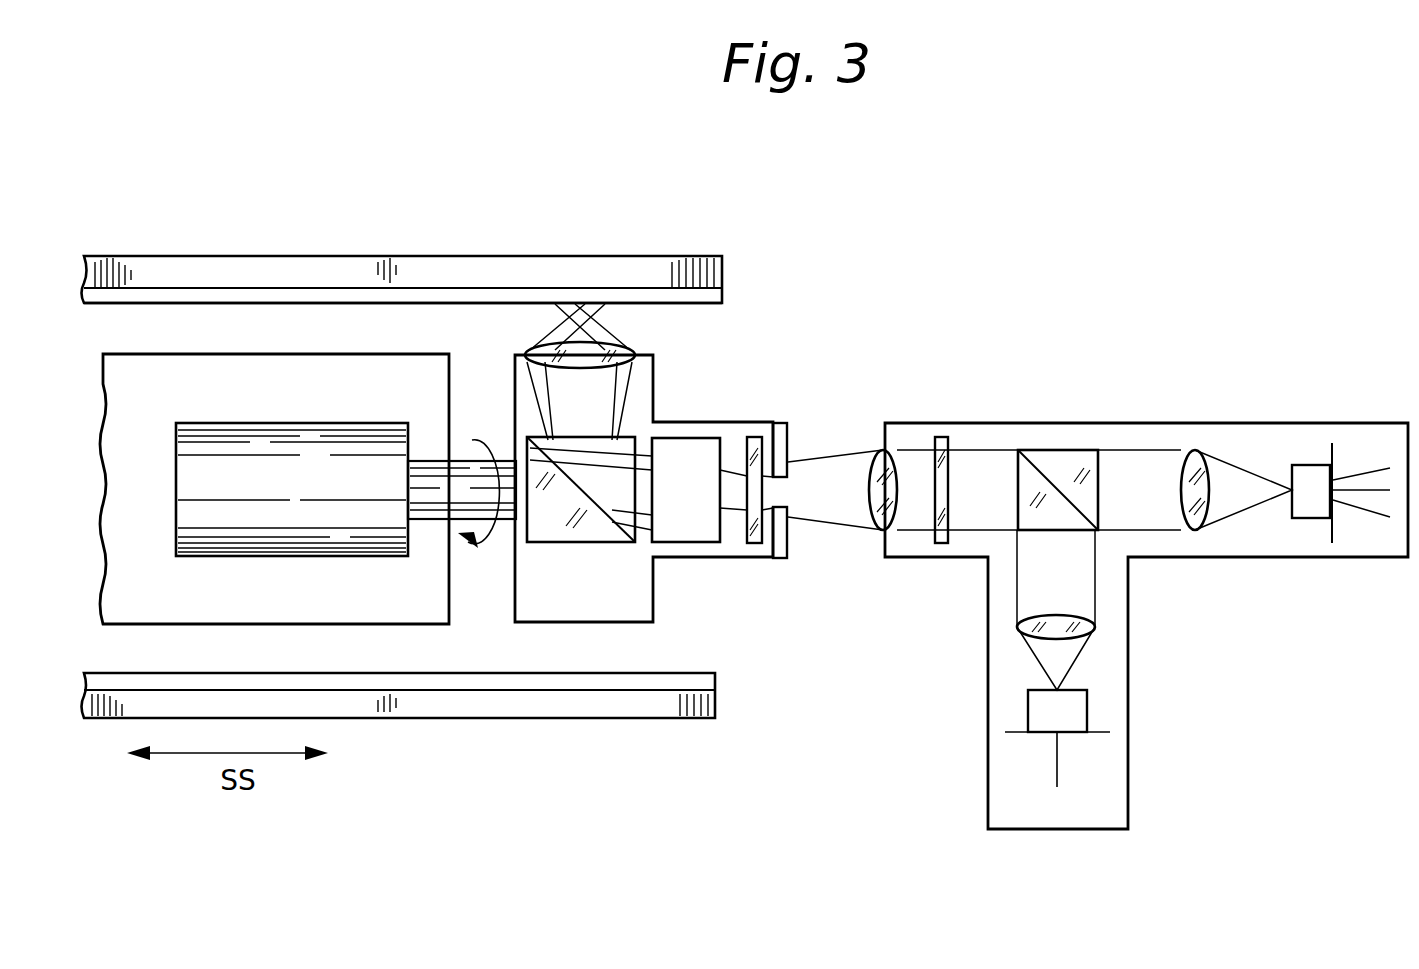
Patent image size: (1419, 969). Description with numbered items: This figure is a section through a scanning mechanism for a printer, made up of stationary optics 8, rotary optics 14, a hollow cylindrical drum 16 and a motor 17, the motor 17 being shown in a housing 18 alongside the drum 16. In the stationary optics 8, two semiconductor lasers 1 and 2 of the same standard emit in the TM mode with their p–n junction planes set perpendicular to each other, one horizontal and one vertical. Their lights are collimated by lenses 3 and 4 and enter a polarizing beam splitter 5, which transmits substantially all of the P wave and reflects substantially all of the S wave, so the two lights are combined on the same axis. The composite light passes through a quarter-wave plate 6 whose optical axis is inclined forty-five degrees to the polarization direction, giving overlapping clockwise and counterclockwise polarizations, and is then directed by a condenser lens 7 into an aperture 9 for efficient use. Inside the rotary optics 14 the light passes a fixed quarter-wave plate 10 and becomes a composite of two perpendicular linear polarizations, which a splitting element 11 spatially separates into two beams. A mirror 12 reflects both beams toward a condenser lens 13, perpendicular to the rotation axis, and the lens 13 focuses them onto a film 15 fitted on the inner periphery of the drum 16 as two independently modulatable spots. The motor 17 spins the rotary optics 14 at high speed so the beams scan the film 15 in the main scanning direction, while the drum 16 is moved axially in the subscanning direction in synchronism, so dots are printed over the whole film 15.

The semiconductor laser 1 is at (1315, 515).
The semiconductor laser 2 is at (1050, 718).
The lens 3 is at (1197, 455).
The lens 4 is at (1095, 627).
The polarizing beam splitter 5 is at (1078, 465).
The quarter-wave plate 6 is at (942, 445).
The condenser lens 7 is at (878, 530).
The stationary optics 8 is at (988, 790).
The aperture 9 is at (790, 437).
The quarter-wave plate 10 is at (757, 440).
The splitting element 11 is at (681, 455).
The mirror 12 is at (580, 520).
The condenser lens 13 is at (583, 350).
The rotary optics 14 is at (515, 600).
The film 15 is at (425, 298).
The drum 16 is at (290, 276).
The motor 17 is at (253, 440).
The motor housing 18 is at (170, 355).